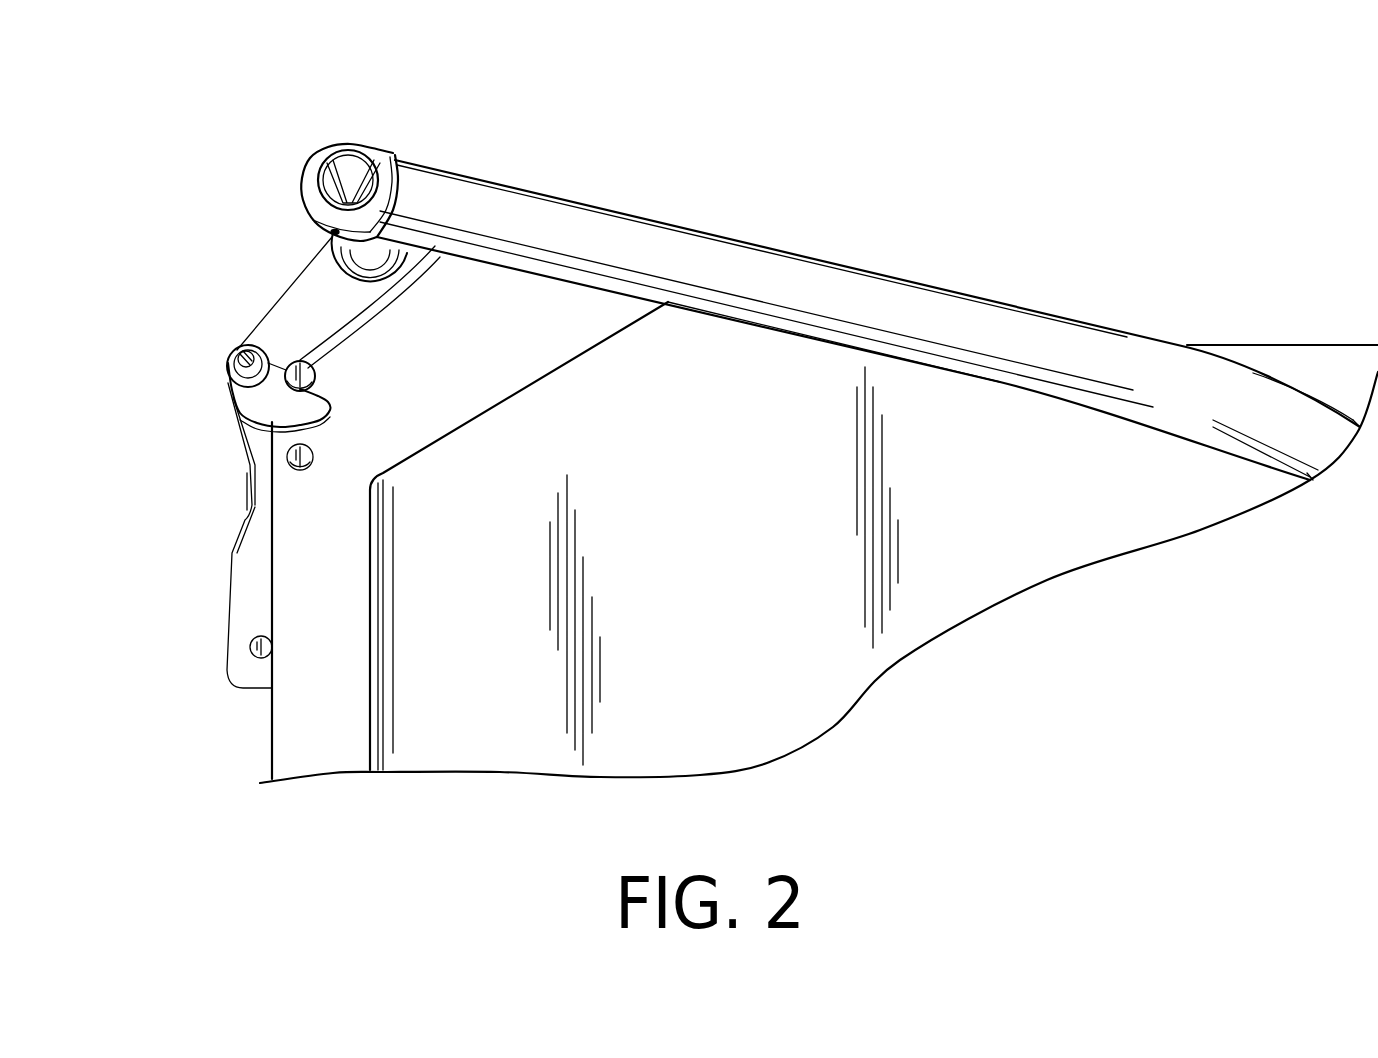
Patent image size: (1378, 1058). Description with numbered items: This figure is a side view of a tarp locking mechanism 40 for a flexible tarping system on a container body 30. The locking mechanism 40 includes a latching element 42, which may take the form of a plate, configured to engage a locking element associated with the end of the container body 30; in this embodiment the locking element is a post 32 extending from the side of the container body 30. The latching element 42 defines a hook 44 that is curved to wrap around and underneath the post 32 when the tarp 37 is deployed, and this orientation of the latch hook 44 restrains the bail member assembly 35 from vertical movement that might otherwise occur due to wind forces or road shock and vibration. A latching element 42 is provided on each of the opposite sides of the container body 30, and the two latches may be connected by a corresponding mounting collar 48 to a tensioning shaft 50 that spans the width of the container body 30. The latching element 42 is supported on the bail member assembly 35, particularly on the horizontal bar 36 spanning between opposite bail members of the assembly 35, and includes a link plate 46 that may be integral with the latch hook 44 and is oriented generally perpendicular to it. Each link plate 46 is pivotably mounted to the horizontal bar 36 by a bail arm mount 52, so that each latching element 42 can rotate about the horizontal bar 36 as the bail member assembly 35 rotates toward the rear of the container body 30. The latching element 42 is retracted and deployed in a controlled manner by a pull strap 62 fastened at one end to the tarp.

The container body 30 is at (447, 706).
The post 32 is at (318, 372).
The bail member assembly 35 is at (784, 270).
The horizontal bar 36 is at (318, 232).
The tarp 37 is at (1270, 336).
The tarp locking mechanism 40 is at (375, 138).
The latching element 42 is at (247, 302).
The hook 44 is at (267, 398).
The link plate 46 is at (300, 300).
The mounting collar 48 is at (262, 342).
The tensioning shaft 50 is at (236, 348).
The bail arm mount 52 is at (352, 255).
The pull strap 62 is at (512, 333).